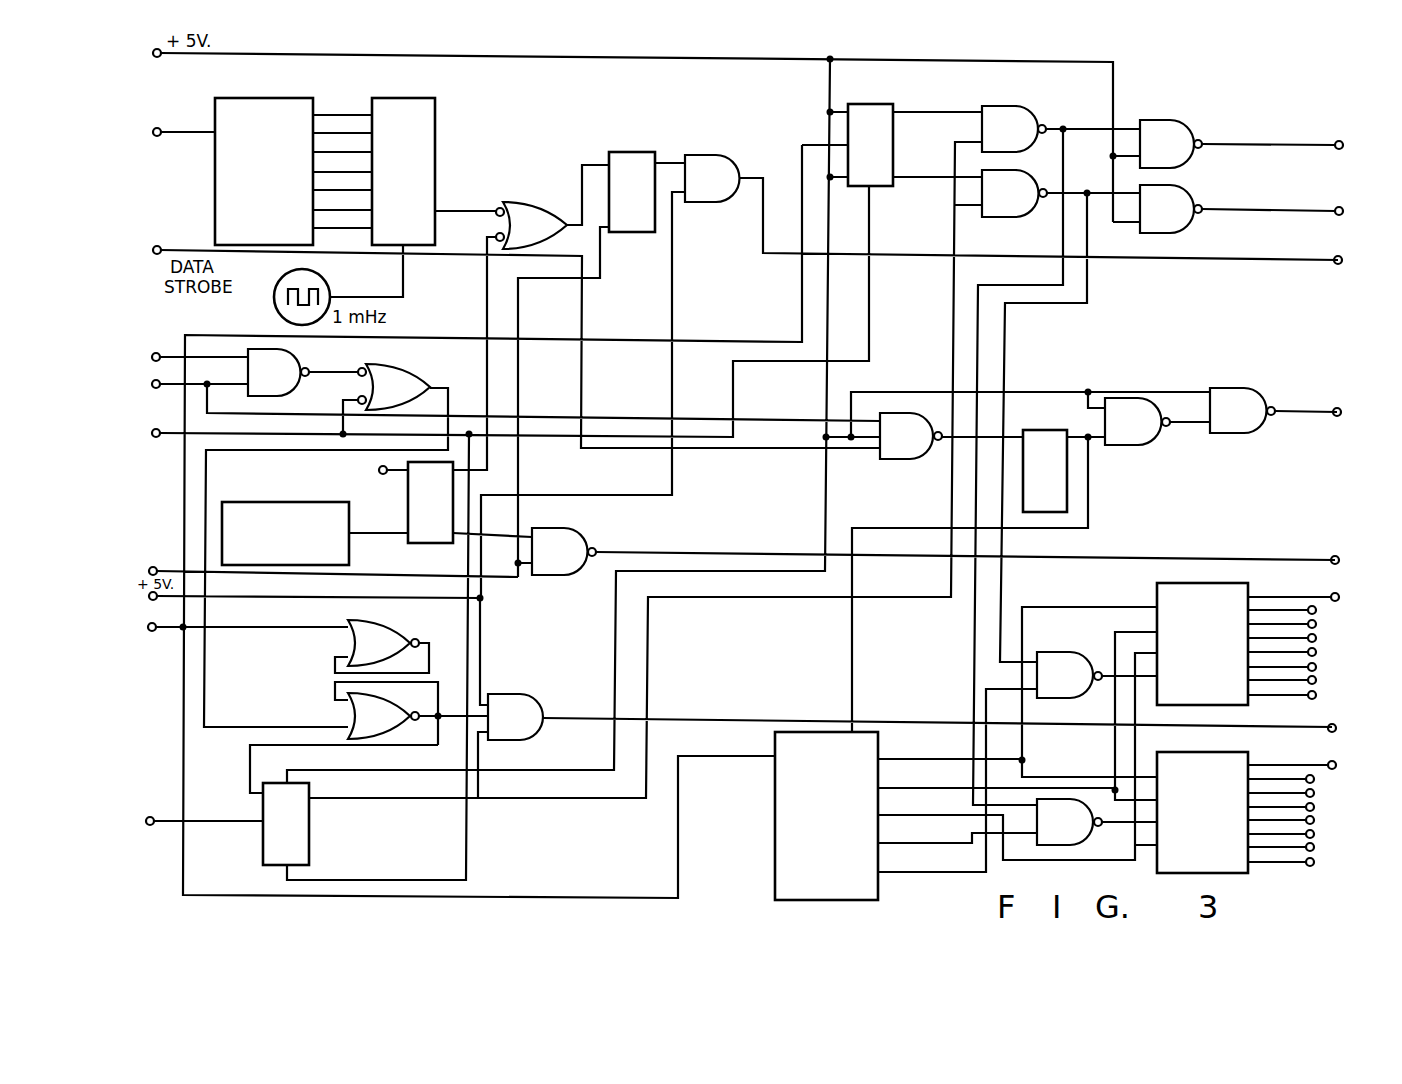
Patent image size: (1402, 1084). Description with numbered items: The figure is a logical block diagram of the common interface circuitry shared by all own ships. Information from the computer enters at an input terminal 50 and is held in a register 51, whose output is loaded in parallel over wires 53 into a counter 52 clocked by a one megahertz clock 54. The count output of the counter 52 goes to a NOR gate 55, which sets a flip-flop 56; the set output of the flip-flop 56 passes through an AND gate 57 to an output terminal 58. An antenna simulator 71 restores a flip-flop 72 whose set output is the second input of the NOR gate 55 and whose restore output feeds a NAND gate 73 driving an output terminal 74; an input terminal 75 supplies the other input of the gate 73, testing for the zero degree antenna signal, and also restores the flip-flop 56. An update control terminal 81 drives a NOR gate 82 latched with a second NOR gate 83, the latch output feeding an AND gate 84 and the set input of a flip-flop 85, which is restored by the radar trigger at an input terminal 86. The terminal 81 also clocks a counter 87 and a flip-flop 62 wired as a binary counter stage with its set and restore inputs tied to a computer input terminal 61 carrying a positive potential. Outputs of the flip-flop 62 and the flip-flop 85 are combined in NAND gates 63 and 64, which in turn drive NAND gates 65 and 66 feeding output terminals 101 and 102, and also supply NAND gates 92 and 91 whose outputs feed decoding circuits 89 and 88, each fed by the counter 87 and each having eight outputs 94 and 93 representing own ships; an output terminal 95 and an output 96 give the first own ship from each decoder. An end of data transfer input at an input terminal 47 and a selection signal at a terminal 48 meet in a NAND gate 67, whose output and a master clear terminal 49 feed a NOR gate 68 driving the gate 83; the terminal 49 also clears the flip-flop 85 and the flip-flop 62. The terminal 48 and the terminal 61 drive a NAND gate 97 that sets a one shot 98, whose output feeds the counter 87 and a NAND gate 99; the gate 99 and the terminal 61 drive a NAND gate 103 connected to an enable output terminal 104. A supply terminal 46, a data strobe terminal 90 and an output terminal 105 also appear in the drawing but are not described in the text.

The +5V supply terminal 46 is at (149, 596).
The input terminal 47 is at (152, 357).
The terminal 48 is at (152, 384).
The master clear terminal 49 is at (152, 433).
The input terminal 50 is at (153, 133).
The register 51 is at (277, 101).
The counter 52 is at (404, 100).
The wires 53 is at (341, 133).
The 1 mHz clock 54 is at (315, 283).
The NOR gate 55 is at (543, 213).
The flip-flop 56 is at (631, 156).
The AND gate 57 is at (713, 157).
The output terminal 58 is at (1341, 256).
The computer input terminal 61 is at (153, 51).
The flip-flop 62 is at (865, 108).
The NAND gate 63 is at (1010, 112).
The NAND gate 64 is at (1011, 177).
The NAND gate 65 is at (1172, 132).
The NAND gate 66 is at (1178, 198).
The NAND gate 67 is at (293, 366).
The NOR gate 68 is at (404, 378).
The antenna simulator 71 is at (303, 508).
The flip-flop 72 is at (406, 504).
The NAND gate 73 is at (566, 540).
The output terminal 74 is at (1338, 556).
The input terminal 75 is at (149, 571).
The update control terminal 81 is at (148, 627).
The NOR gate 82 is at (389, 634).
The NOR gate 83 is at (401, 714).
The AND gate 84 is at (524, 708).
The flip-flop 85 is at (305, 850).
The input terminal 86 is at (146, 821).
The counter 87 is at (788, 773).
The decoding circuit 88 is at (1248, 596).
The decoding circuit 89 is at (1244, 766).
The data strobe input terminal 90 is at (153, 250).
The NAND gate 91 is at (1069, 662).
The NAND gate 92 is at (1084, 838).
The outputs 93 is at (1316, 624).
The outputs 94 is at (1314, 793).
The output terminal 95 is at (1338, 593).
The output 96 is at (1335, 761).
The NAND gate 97 is at (907, 452).
The one shot 98 is at (1040, 438).
The NAND gate 99 is at (1142, 445).
The output terminal 101 is at (1342, 141).
The output terminal 102 is at (1342, 207).
The NAND gate 103 is at (1240, 397).
The enable output terminal 104 is at (1340, 408).
The output terminal 105 is at (1335, 724).